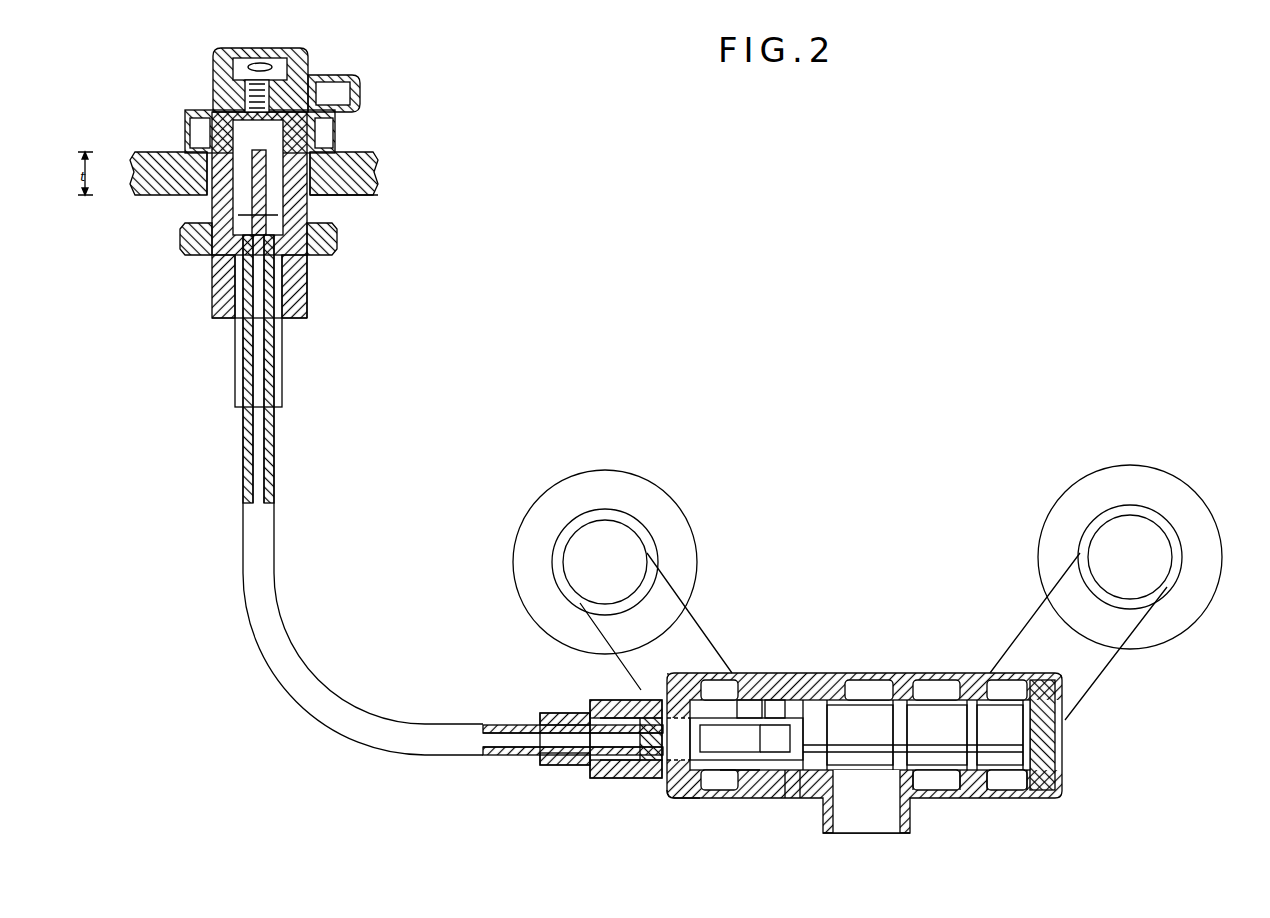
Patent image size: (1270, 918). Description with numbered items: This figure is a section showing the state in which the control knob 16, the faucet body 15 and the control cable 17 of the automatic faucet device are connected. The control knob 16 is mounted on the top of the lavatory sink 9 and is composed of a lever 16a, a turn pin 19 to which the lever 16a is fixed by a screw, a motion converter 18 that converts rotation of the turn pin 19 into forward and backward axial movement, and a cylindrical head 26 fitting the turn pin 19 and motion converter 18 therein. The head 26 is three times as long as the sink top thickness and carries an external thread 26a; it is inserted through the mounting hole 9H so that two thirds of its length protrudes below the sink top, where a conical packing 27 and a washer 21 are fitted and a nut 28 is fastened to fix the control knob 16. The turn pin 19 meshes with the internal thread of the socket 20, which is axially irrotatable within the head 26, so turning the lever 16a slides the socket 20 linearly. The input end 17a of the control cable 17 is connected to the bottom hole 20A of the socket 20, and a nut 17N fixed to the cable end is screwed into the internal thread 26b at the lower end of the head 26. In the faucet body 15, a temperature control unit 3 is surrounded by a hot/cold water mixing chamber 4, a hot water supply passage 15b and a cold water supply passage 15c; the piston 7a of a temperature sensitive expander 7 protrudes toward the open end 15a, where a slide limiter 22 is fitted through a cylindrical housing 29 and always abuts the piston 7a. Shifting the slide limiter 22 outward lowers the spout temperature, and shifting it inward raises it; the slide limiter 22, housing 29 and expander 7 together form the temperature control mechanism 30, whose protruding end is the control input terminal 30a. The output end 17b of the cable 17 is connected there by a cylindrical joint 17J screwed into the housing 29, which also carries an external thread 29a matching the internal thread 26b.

The temperature control unit 3 is at (930, 705).
The hot/cold water mixing chamber 4 is at (863, 778).
The temperature sensitive expander 7 is at (798, 715).
The piston 7a is at (781, 697).
The lavatory sink 9 is at (372, 153).
The mounting hole 9H is at (212, 193).
The faucet body 15 is at (870, 690).
The open end 15a is at (667, 795).
The hot water supply passage 15b is at (1007, 777).
The cold water supply passage 15c is at (940, 777).
The control knob 16 is at (328, 63).
The lever 16a is at (362, 94).
The control cable 17 is at (290, 622).
The input end 17a is at (258, 177).
The output end 17b is at (628, 780).
The cylindrical joint 17J is at (555, 767).
The nut 17N is at (300, 313).
The motion converter 18 is at (205, 292).
The turn pin 19 is at (344, 182).
The socket 20 is at (313, 290).
The bottom hole 20A is at (278, 328).
The washer 21 is at (200, 272).
The slide limiter 22 is at (734, 765).
The cylindrical head 26 is at (310, 194).
The external thread 26a is at (310, 262).
The internal thread 26b is at (215, 316).
The conical packing 27 is at (200, 225).
The nut 28 is at (335, 248).
The cylindrical housing 29 is at (742, 690).
The external thread 29a is at (625, 700).
The temperature control mechanism 30 is at (793, 778).
The control input terminal 30a is at (647, 782).